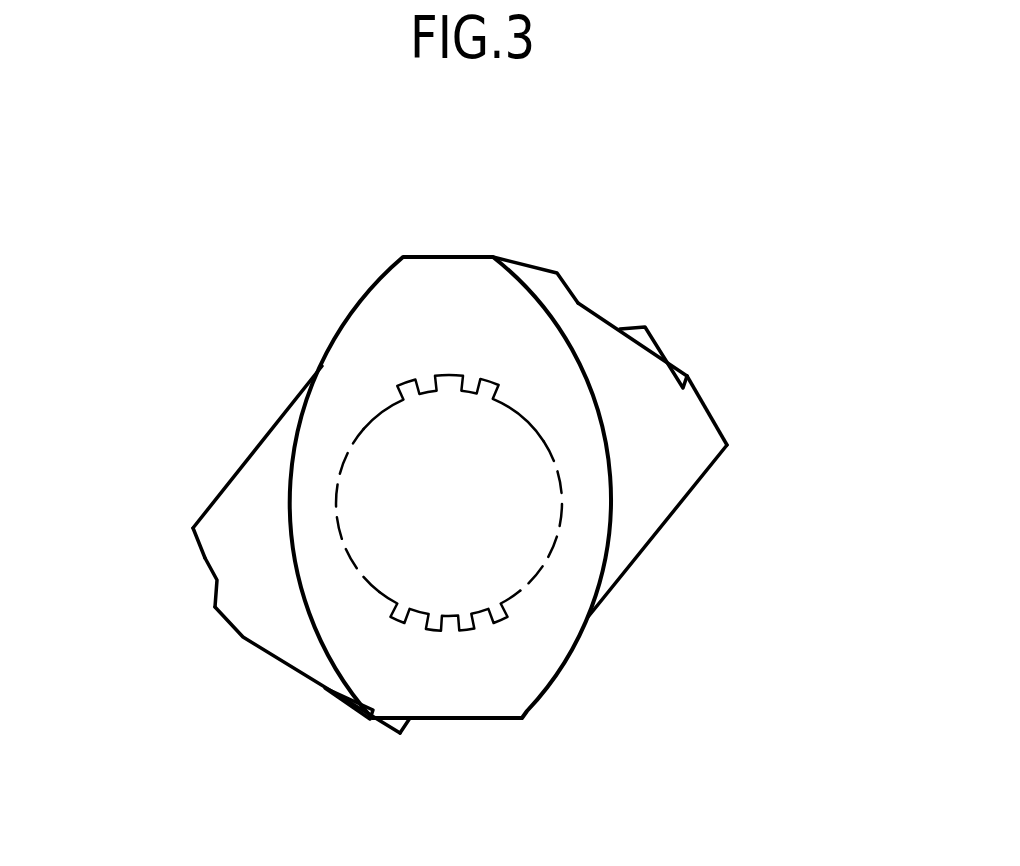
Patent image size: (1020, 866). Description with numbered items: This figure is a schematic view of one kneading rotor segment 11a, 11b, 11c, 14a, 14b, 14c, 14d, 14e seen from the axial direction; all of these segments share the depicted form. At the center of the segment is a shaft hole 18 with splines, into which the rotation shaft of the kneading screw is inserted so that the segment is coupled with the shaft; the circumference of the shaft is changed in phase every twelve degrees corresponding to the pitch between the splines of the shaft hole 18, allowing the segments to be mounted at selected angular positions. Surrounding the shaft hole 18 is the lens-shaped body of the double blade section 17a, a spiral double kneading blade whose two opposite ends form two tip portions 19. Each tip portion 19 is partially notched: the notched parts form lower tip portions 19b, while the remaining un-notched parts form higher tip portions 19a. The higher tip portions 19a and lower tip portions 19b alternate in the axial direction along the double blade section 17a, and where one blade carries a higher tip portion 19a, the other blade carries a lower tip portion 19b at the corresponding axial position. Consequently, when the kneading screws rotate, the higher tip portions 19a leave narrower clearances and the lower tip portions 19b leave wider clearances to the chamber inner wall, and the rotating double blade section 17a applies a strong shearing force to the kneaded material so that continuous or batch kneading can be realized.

The kneading rotor segment 11a is at (461, 491).
The kneading rotor segment 11b is at (461, 491).
The kneading rotor segment 11c is at (461, 491).
The kneading rotor segment 14a is at (461, 491).
The kneading rotor segment 14b is at (461, 491).
The kneading rotor segment 14c is at (461, 491).
The kneading rotor segment 14d is at (461, 491).
The kneading rotor segment 14e is at (297, 352).
The double blade section 17a is at (450, 305).
The shaft hole 18 is at (370, 423).
The tip portion 19 is at (461, 491).
The higher tip portion 19a is at (524, 262).
The lower tip portion 19b is at (599, 310).